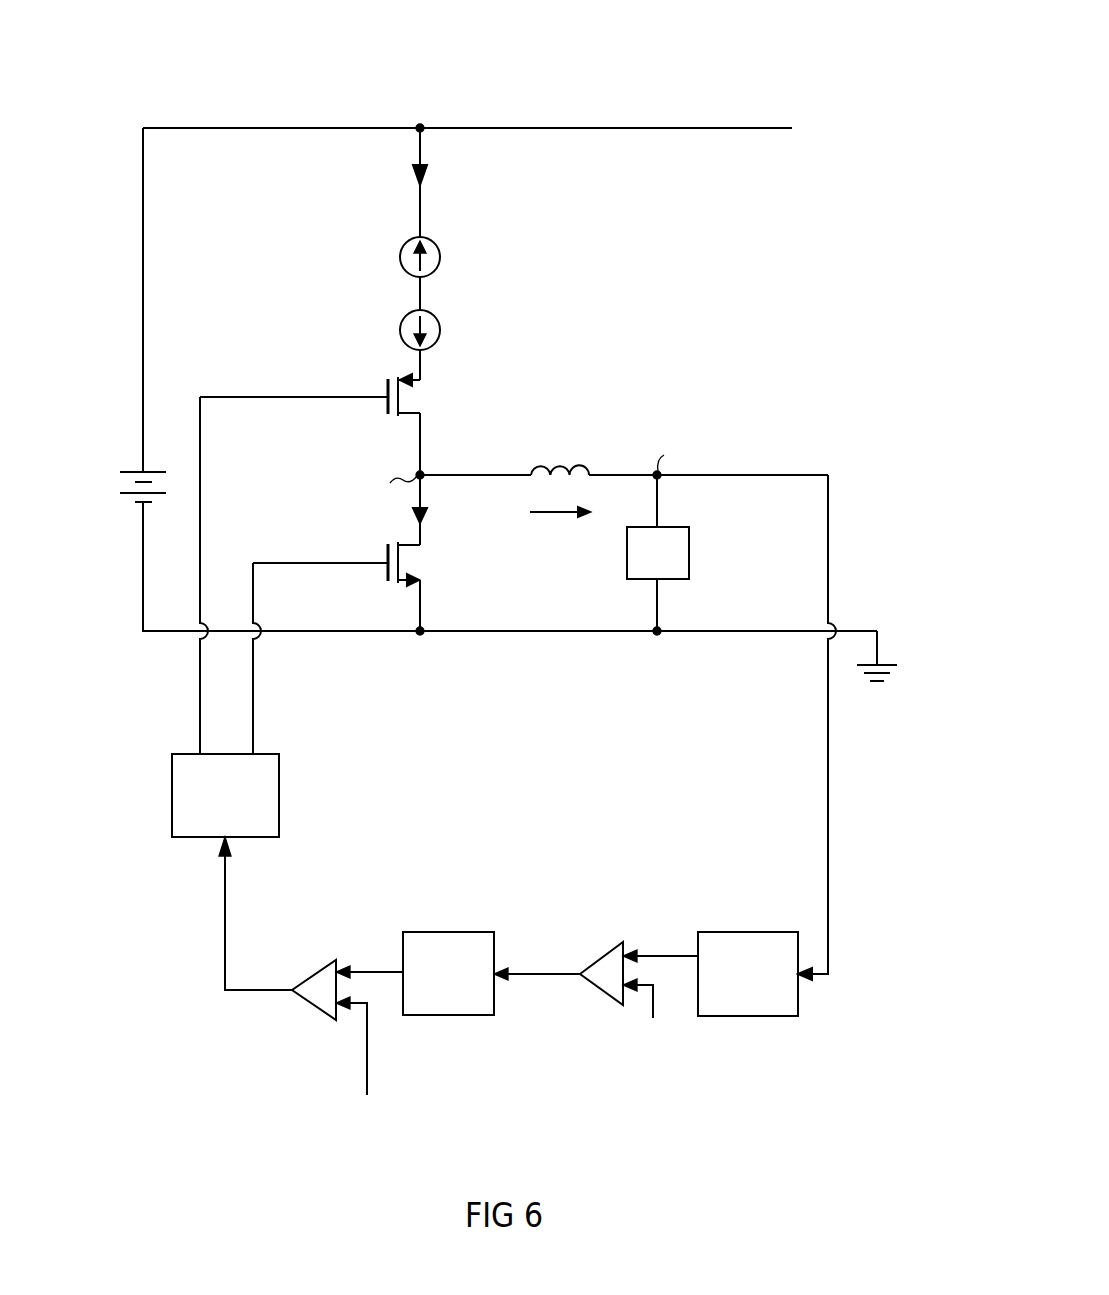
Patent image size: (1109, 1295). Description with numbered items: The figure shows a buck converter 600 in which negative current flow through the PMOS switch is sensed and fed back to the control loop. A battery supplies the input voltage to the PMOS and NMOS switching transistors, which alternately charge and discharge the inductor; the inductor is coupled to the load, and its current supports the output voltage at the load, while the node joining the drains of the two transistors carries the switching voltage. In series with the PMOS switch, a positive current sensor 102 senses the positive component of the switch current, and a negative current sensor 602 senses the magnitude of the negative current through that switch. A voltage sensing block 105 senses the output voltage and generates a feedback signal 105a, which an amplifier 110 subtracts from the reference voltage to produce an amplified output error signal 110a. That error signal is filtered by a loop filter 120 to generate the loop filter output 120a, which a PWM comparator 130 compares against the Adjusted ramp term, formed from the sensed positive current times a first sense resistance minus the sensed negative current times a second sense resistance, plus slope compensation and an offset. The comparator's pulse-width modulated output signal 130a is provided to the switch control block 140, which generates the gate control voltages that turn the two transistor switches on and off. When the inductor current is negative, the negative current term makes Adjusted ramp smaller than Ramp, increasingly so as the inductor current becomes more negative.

The buck converter 600 is at (759, 62).
The negative current sensor 602 is at (403, 250).
The positive current sensor 102 is at (403, 323).
The switch control block 140 is at (252, 838).
The PWM comparator 130 is at (318, 968).
The output signal of comparator 130a is at (224, 962).
The loop filter 120 is at (453, 1017).
The loop filter output 120a is at (379, 970).
The amplifier 110 is at (604, 955).
The amplified output error signal 110a is at (554, 976).
The voltage sensing block 105 is at (740, 932).
The feedback signal 105a is at (660, 955).